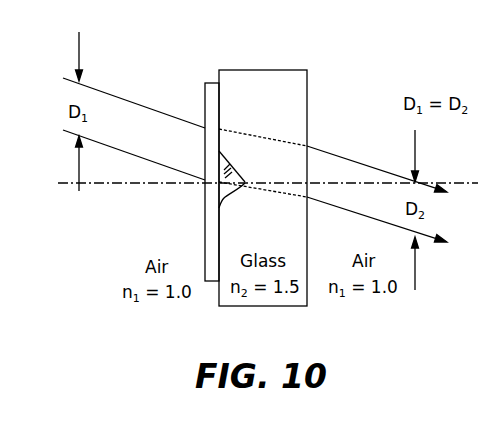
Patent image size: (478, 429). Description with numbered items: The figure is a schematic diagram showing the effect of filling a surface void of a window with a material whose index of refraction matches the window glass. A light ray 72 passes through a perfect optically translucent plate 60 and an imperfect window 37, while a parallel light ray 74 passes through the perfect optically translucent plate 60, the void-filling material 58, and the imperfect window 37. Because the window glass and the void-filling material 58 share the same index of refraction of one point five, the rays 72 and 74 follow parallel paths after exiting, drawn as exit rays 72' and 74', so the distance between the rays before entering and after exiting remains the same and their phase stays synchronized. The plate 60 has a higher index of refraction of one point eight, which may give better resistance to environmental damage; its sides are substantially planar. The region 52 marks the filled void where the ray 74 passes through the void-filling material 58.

The imperfect window 37 is at (293, 306).
The perfect optically translucent plate 60 is at (217, 84).
The void-filling material 58 is at (237, 180).
The focal/coupling region 52 is at (248, 182).
The light ray 72 is at (134, 97).
The parallel light ray 74 is at (134, 151).
The refracted outgoing light ray 72' is at (377, 163).
The refracted outgoing light ray 74' is at (377, 217).